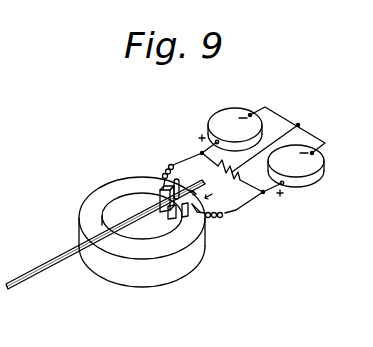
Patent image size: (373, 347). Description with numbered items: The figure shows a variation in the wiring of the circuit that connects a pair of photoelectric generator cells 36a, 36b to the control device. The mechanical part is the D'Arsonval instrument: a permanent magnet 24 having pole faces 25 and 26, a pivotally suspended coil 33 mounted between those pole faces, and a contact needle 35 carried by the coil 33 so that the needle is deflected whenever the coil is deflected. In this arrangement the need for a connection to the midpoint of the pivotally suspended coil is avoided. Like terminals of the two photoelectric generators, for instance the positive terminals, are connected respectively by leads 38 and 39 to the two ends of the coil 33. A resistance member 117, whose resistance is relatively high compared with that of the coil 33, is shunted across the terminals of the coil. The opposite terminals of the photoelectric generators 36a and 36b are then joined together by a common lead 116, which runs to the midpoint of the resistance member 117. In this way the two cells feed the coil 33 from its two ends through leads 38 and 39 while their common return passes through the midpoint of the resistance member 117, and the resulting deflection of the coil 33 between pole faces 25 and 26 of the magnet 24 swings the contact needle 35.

The permanent magnet 24 is at (177, 268).
The pole face 25 is at (197, 230).
The pole face 26 is at (157, 194).
The pivotally suspended coil 33 is at (167, 222).
The contact needle 35 is at (50, 264).
The photoelectric generator cell 36a is at (235, 113).
The photoelectric generator cell 36b is at (305, 177).
The lead 38 is at (187, 162).
The lead 39 is at (242, 209).
The common lead 116 is at (275, 143).
The resistance member 117 is at (221, 179).